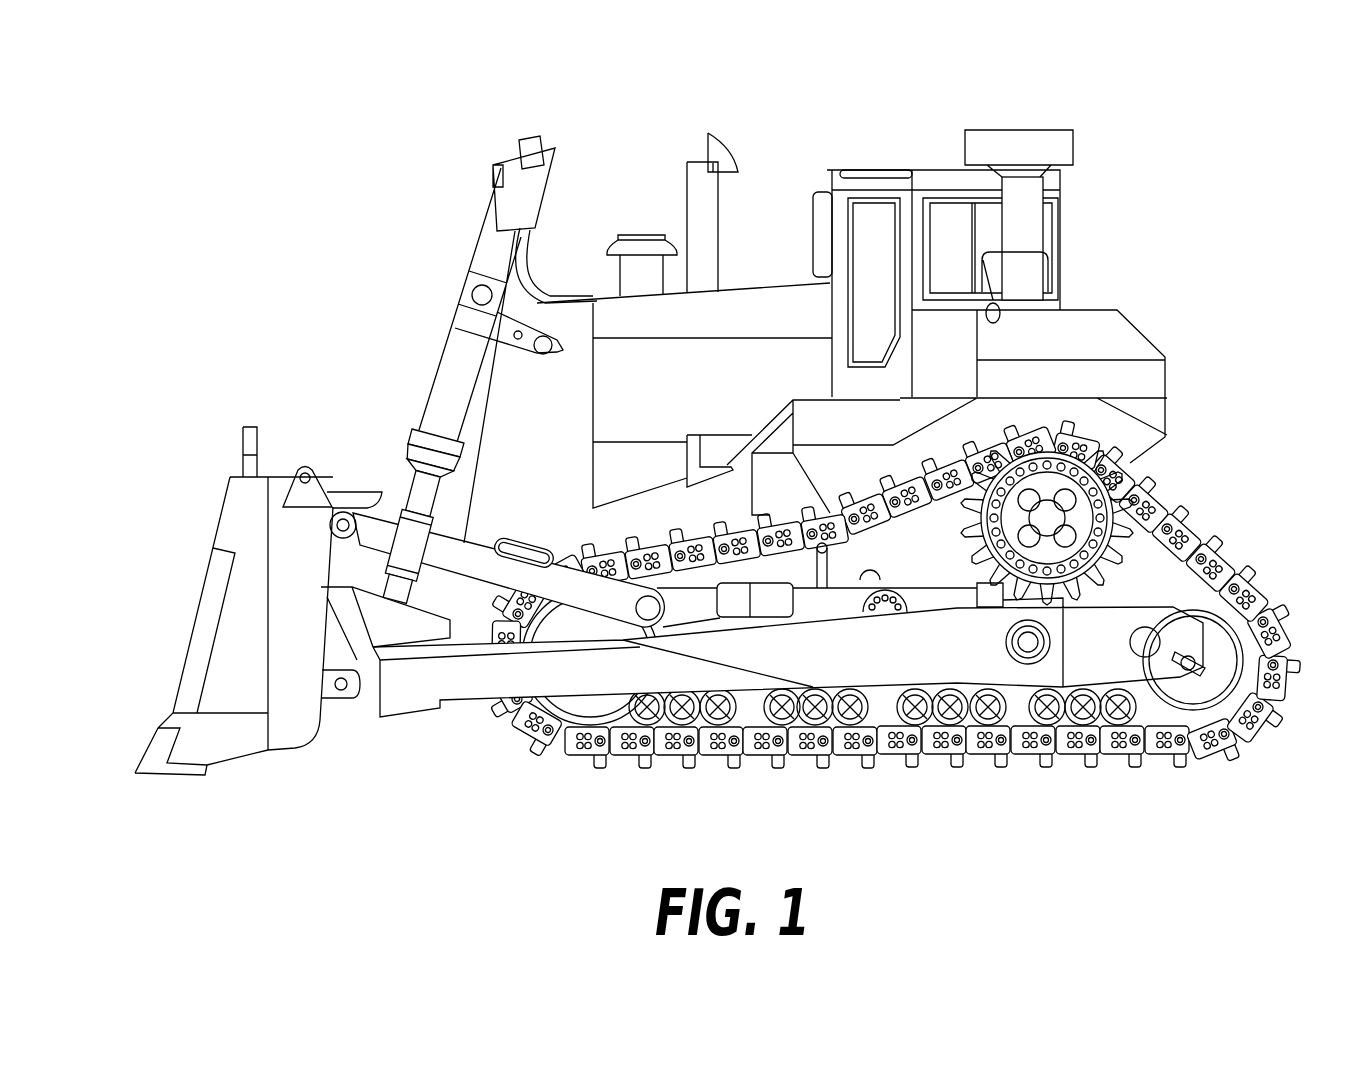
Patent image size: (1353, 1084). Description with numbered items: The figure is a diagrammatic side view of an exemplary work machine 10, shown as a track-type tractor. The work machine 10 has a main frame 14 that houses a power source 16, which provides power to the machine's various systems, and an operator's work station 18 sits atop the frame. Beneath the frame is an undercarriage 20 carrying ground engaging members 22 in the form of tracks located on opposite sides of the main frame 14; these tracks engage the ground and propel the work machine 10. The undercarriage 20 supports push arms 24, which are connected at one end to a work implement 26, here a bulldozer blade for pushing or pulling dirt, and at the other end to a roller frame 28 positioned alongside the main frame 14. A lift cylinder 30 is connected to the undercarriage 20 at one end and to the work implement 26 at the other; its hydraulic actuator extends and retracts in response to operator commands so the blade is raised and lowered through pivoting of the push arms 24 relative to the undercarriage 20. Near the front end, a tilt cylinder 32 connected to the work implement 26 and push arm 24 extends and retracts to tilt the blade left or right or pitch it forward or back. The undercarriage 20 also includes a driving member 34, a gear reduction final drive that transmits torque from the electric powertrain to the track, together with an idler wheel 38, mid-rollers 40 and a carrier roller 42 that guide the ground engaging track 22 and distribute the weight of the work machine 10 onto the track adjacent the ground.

The work machine 10 is at (704, 459).
The main frame 14 is at (558, 432).
The power source 16 is at (716, 396).
The work station 18 is at (902, 192).
The undercarriage 20 is at (838, 642).
The ground engaging members 22 is at (1203, 548).
The push arms 24 is at (470, 695).
The work implement 26 is at (192, 617).
The roller frame 28 is at (823, 610).
The lift cylinder 30 is at (468, 254).
The tilt cylinder 32 is at (468, 551).
The driving member 34 is at (1107, 552).
The idler wheel 38 is at (587, 707).
The mid-rollers 40 is at (1093, 750).
The carrier roller 42 is at (843, 547).